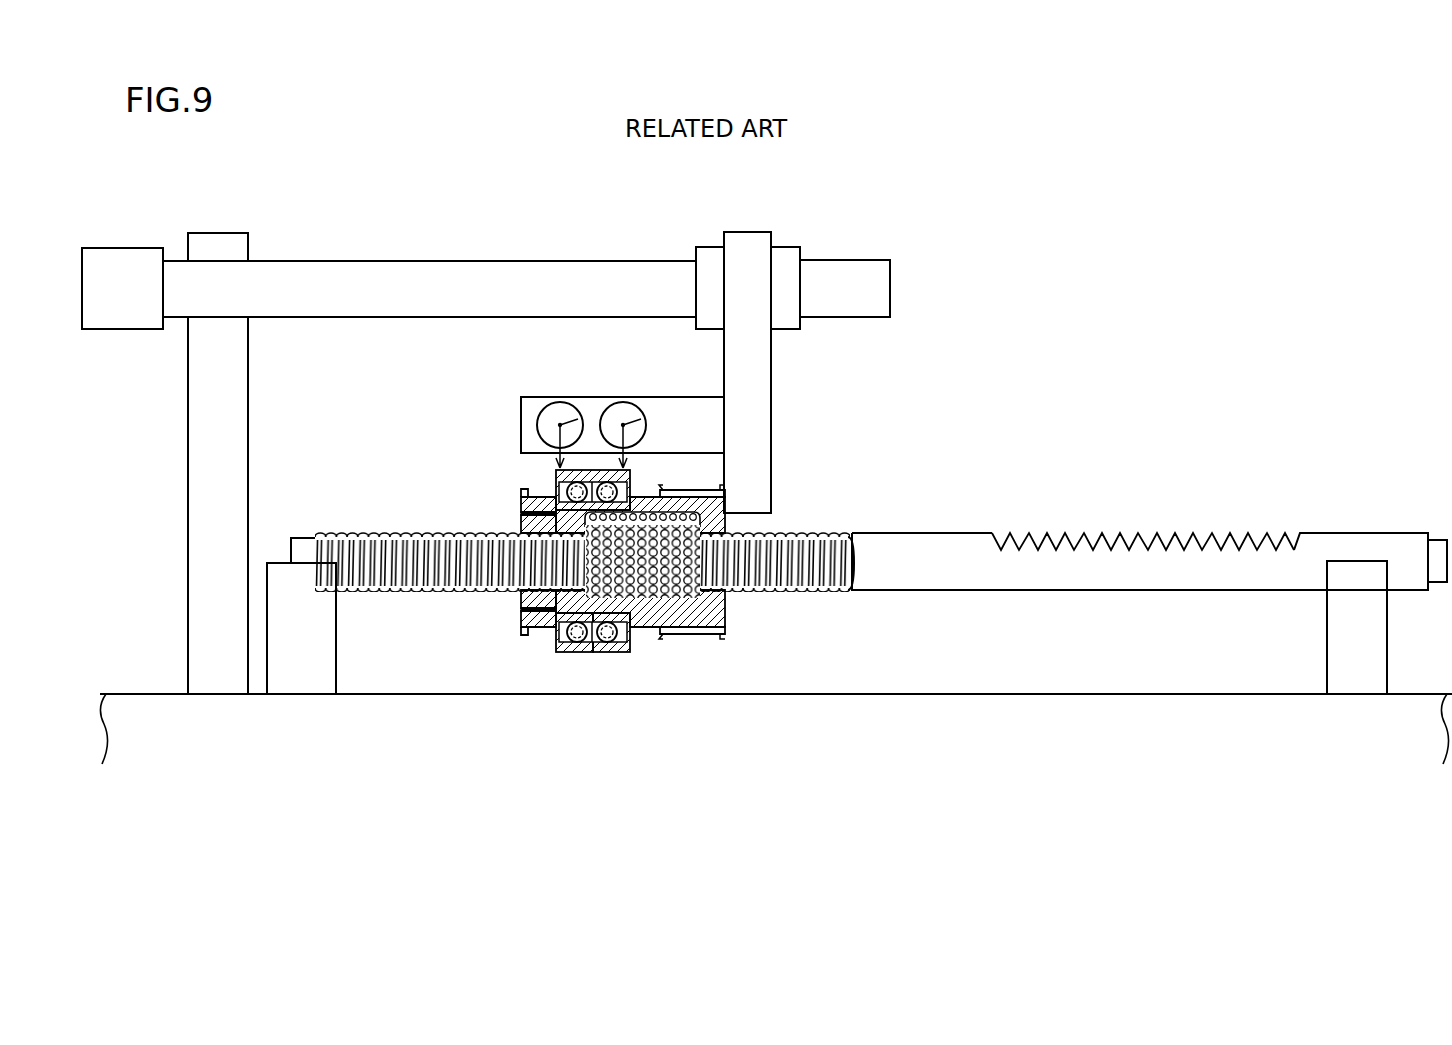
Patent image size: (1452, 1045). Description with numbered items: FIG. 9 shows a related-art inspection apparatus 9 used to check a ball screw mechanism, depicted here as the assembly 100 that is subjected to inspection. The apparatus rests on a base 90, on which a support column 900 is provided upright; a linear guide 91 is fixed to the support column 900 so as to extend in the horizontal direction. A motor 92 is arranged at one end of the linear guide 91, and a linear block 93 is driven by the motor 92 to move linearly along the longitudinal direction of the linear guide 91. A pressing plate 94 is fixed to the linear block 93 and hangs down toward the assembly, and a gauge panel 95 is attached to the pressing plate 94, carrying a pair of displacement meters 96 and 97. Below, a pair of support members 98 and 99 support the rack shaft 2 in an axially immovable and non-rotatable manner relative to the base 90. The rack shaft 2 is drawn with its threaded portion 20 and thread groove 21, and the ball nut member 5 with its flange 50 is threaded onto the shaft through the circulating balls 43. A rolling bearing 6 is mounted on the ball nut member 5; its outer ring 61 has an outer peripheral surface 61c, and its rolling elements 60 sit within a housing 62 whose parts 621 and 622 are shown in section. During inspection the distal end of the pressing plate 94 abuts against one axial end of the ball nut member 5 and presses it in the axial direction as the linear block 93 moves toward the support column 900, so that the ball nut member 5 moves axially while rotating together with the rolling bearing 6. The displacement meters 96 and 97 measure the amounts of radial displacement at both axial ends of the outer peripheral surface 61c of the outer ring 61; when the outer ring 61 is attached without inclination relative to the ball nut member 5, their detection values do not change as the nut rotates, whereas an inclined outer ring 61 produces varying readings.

The inspection apparatus 9 is at (272, 200).
The base 90 is at (915, 706).
The support column 900 is at (187, 481).
The linear guide 91 is at (458, 261).
The motor 92 is at (125, 248).
The linear block 93 is at (788, 247).
The pressing plate 94 is at (773, 421).
The gauge panel 95 is at (665, 397).
The displacement meter 96 is at (553, 397).
The displacement meter 97 is at (614, 397).
The support member 98 is at (337, 661).
The support member 99 is at (1388, 646).
The rack shaft 2 is at (1149, 538).
The spline portion of screw shaft 20 is at (1097, 533).
The thread groove of screw shaft 21 is at (410, 533).
The balls 43 is at (698, 572).
The ball nut member 5 is at (644, 552).
The nut flange 50 is at (521, 499).
The rolling bearing 6 is at (592, 580).
The bearing balls 60 is at (604, 643).
The outer ring 61 is at (628, 473).
The outer peripheral surface 61c is at (606, 650).
The bearing housing 62 is at (632, 499).
The housing first part 621 is at (553, 627).
The housing second part 622 is at (630, 627).
The assembly 100 is at (644, 580).